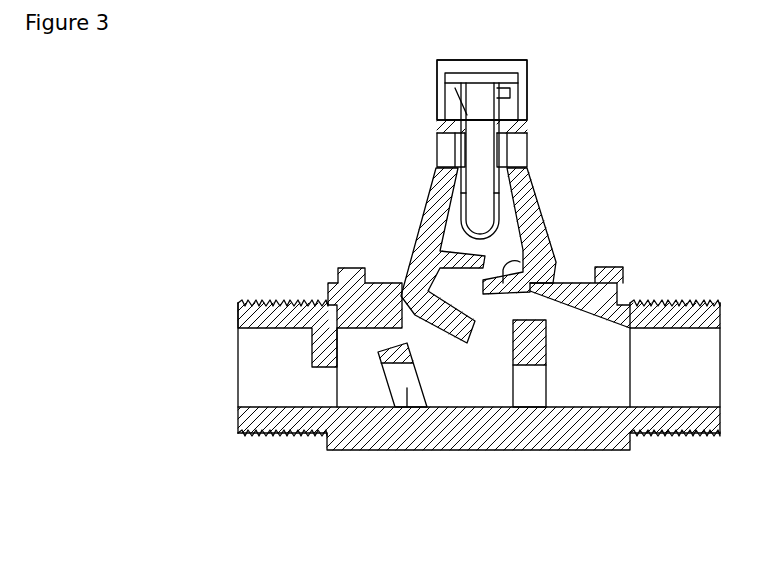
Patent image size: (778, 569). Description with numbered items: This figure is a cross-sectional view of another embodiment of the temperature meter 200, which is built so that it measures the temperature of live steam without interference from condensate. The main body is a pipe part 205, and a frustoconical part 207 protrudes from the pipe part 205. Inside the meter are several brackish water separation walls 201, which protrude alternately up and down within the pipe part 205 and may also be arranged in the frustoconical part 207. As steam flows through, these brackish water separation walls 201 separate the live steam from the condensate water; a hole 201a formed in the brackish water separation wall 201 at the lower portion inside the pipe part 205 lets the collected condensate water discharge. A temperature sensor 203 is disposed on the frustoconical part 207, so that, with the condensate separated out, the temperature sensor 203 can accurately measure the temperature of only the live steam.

The temperature meter 200 is at (672, 224).
The brackish water separation wall 201 is at (313, 350).
The hole 201a is at (407, 388).
The temperature sensor 203 is at (485, 150).
The pipe part 205 is at (612, 440).
The frustoconical part 207 is at (533, 192).